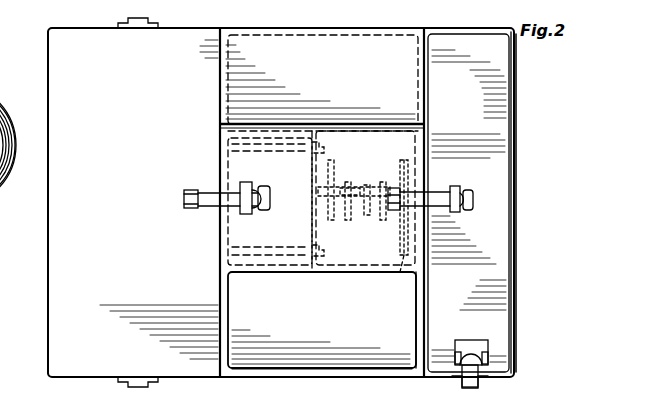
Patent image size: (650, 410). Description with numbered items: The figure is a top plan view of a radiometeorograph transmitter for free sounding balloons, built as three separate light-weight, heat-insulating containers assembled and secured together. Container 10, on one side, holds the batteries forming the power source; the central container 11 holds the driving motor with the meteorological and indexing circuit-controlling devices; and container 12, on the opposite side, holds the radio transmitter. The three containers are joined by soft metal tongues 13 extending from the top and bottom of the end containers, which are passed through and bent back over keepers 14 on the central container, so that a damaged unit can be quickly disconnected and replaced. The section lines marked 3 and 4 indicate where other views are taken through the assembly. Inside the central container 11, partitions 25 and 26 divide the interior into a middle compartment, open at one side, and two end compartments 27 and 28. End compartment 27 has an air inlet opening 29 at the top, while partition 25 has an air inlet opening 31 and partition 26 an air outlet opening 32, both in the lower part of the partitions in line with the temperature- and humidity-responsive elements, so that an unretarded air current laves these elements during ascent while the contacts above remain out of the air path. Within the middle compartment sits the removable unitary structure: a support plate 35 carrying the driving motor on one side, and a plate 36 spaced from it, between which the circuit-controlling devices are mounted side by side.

The section line 3- 3 is at (200, 20).
The section line 4- 4 is at (446, 20).
The container 10 is at (501, 128).
The central container 11 is at (302, 377).
The container 12 is at (47, 257).
The soft metal tongues 13 is at (212, 205).
The keepers 14 is at (248, 185).
The partition 25 is at (277, 266).
The partition 26 is at (306, 126).
The end compartment 27 is at (270, 360).
The end compartment 28 is at (318, 48).
The air inlet opening 29 is at (352, 369).
The air inlet opening 31 is at (356, 276).
The air outlet opening 32 is at (385, 118).
The support plate 35 is at (322, 238).
The plate 36 is at (402, 272).